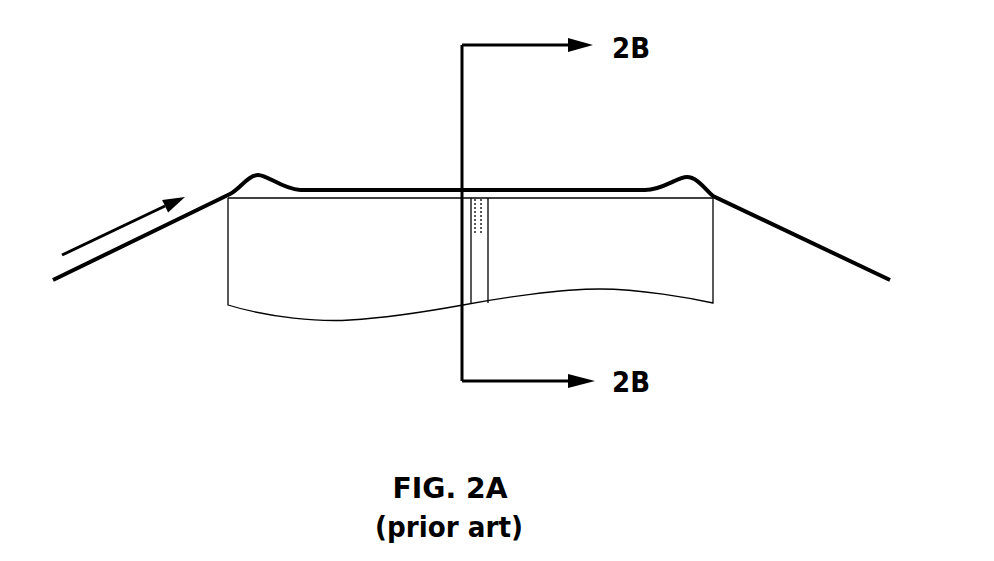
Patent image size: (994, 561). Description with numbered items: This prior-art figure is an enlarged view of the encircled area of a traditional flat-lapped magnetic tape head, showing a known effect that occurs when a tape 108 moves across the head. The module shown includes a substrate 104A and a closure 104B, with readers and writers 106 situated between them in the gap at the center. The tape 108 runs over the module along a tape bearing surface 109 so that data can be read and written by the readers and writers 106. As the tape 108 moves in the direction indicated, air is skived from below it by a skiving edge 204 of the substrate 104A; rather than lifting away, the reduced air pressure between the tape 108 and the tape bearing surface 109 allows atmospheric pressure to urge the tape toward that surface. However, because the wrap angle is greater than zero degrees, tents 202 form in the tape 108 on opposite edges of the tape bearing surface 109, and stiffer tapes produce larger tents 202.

The tents 202 is at (247, 150).
The tape 108 is at (349, 187).
The tape bearing surface 109 is at (601, 183).
The readers and writers 106 is at (480, 196).
The substrate 104A is at (332, 302).
The closure 104B is at (623, 270).
The skiving edge 204 is at (212, 215).